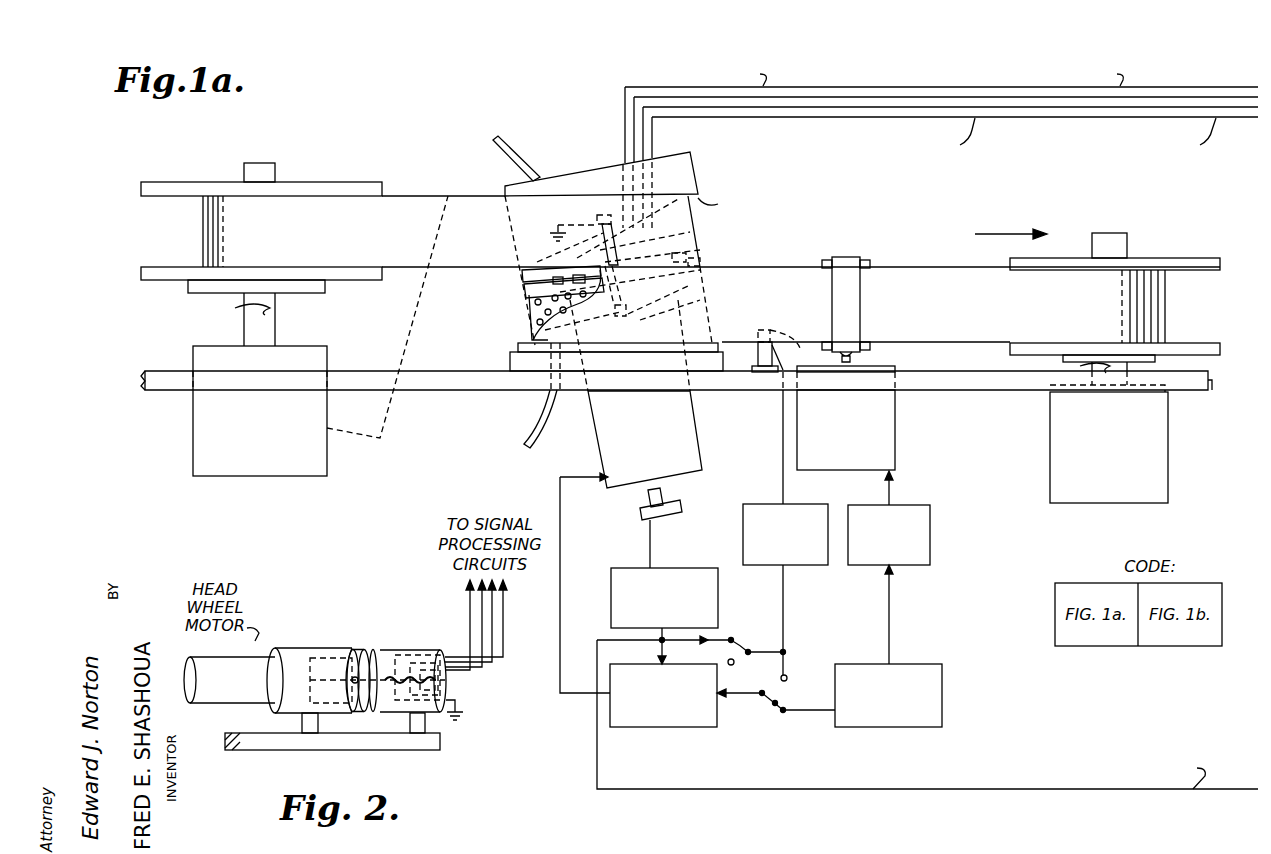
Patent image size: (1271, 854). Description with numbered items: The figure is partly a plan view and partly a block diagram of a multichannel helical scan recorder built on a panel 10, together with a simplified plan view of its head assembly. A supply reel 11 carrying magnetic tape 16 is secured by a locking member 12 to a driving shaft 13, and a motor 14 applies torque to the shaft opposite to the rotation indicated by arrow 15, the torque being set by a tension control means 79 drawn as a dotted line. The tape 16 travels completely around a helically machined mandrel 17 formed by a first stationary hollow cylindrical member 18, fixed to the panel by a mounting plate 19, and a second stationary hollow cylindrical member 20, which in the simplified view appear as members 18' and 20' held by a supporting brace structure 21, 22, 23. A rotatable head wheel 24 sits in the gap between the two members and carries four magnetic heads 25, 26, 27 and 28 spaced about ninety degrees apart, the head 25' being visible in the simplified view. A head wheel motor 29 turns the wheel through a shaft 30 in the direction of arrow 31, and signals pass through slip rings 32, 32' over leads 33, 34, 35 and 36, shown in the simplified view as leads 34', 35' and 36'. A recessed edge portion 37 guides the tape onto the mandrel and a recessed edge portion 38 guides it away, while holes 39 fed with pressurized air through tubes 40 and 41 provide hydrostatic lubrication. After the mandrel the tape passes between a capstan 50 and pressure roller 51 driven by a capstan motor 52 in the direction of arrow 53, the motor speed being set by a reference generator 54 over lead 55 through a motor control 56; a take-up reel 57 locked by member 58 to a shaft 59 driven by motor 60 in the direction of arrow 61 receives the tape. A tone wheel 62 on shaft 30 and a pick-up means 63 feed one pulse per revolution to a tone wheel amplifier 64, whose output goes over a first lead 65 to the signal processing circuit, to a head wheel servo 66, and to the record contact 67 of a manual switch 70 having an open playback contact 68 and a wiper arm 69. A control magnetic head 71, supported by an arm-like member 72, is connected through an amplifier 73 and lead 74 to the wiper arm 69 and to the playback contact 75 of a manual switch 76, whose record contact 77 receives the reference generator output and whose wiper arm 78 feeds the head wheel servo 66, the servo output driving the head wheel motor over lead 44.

In FIG. 1A, the panel 10 is at (171, 372).
In FIG. 1A, the magnetic tape supply reel 11 is at (354, 182).
In FIG. 1A, the locking member 12 is at (266, 163).
In FIG. 1A, the driving shaft 13 is at (277, 338).
In FIG. 1A, the motor 14 is at (193, 438).
In FIG. 1A, the arrow 15 is at (235, 310).
In FIG. 1A, the magnetic tape 16 is at (434, 196).
In FIG. 1A, the helically machined mandrel 17 is at (591, 152).
In FIG. 1A, the first stationary hollow cylindrical member 18 is at (631, 293).
In FIG. 2, the first stationary hollow cylindrical member 18' is at (309, 660).
In FIG. 1A, the mounting plate 19 is at (506, 352).
In FIG. 1A, the second stationary hollow cylindrical member 20 is at (627, 174).
In FIG. 2, the second stationary hollow cylindrical member 20' is at (441, 685).
In FIG. 2, the supporting brace structure 21 is at (408, 738).
In FIG. 2, the supporting brace structure 22 is at (350, 750).
In FIG. 2, the supporting brace structure 23 is at (305, 735).
In FIG. 1A, the head wheel 24 is at (515, 292).
In FIG. 1A, the first magnetic head 25 is at (636, 157).
In FIG. 2, the first magnetic head 25' is at (371, 662).
In FIG. 1A, the second magnetic head 26 is at (687, 252).
In FIG. 2, the second magnetic head 26 is at (392, 712).
In FIG. 1A, the third magnetic head 27 is at (698, 261).
In FIG. 2, the third magnetic head 27 is at (358, 712).
In FIG. 1A, the time shared head 28 is at (606, 315).
In FIG. 2, the time shared head 28 is at (340, 685).
In FIG. 1A, the head wheel motor 29 is at (696, 417).
In FIG. 2, the head wheel motor 29 is at (215, 705).
In FIG. 1A, the shaft 30 is at (674, 504).
In FIG. 1A, the arrow 31 is at (664, 488).
In FIG. 1A, the slip rings 32 is at (586, 249).
In FIG. 2, the slip rings 32' is at (440, 682).
In FIG. 1A, the lead 33 is at (628, 82).
In FIG. 2, the lead 33 is at (503, 620).
In FIG. 1A, the lead 34 is at (920, 161).
In FIG. 2, the lead 34' is at (495, 621).
In FIG. 1A, the lead 35 is at (950, 167).
In FIG. 2, the lead 35' is at (444, 625).
In FIG. 1A, the lead 36 is at (955, 172).
In FIG. 2, the lead 36' is at (463, 623).
In FIG. 1A, the recessed edge portion 37 is at (720, 205).
In FIG. 1A, the recessed edge portion 38 is at (530, 335).
In FIG. 1A, the holes 39 is at (545, 312).
In FIG. 1A, the tube 40 is at (546, 410).
In FIG. 1A, the tube 41 is at (510, 137).
In FIG. 1A, the lead 44 is at (560, 572).
In FIG. 1A, the capstan 50 is at (848, 257).
In FIG. 1A, the pressure roller 51 is at (868, 260).
In FIG. 1A, the capstan motor 52 is at (896, 440).
In FIG. 1A, the arrow 53 is at (1005, 229).
In FIG. 1A, the reference generator 54 is at (942, 708).
In FIG. 1A, the lead 55 is at (898, 622).
In FIG. 1A, the motor control 56 is at (930, 537).
In FIG. 1A, the take-up reel 57 is at (1202, 257).
In FIG. 1A, the locking member 58 is at (1126, 233).
In FIG. 1A, the shaft 59 is at (1140, 375).
In FIG. 1A, the take-up reel motor 60 is at (1168, 470).
In FIG. 1A, the arrow 61 is at (1078, 365).
In FIG. 1A, the tone wheel 62 is at (639, 514).
In FIG. 1A, the magnetic induction pick-up means 63 is at (654, 520).
In FIG. 1A, the tone wheel amplifier 64 is at (698, 568).
In FIG. 1A, the first lead 65 is at (1220, 789).
In FIG. 1A, the head wheel servo 66 is at (668, 728).
In FIG. 1A, the record contact 67 is at (733, 638).
In FIG. 1A, the playback contact 68 is at (729, 661).
In FIG. 1A, the wiper arm 69 is at (746, 654).
In FIG. 1A, the manual switch 70 is at (754, 646).
In FIG. 1A, the control magnetic head 71 is at (832, 351).
In FIG. 1A, the arm-like member 72 is at (758, 361).
In FIG. 1A, the amplifier 73 is at (818, 565).
In FIG. 1A, the lead 74 is at (782, 455).
In FIG. 1A, the playback contact 75 is at (788, 674).
In FIG. 1A, the manual switch 76 is at (760, 695).
In FIG. 1A, the record contact 77 is at (787, 712).
In FIG. 1A, the wiper arm 78 is at (766, 712).
In FIG. 1A, the control means 79 is at (388, 428).